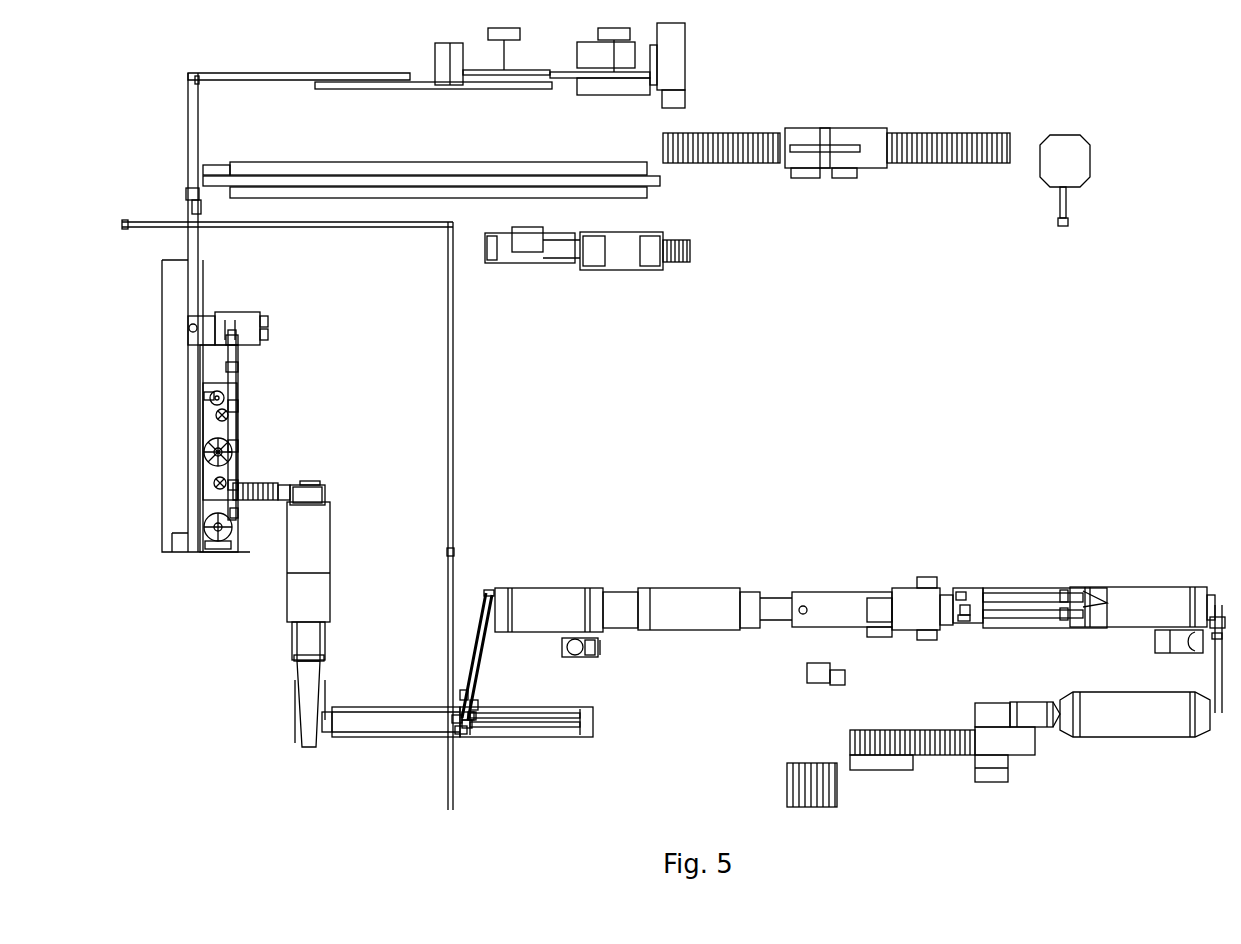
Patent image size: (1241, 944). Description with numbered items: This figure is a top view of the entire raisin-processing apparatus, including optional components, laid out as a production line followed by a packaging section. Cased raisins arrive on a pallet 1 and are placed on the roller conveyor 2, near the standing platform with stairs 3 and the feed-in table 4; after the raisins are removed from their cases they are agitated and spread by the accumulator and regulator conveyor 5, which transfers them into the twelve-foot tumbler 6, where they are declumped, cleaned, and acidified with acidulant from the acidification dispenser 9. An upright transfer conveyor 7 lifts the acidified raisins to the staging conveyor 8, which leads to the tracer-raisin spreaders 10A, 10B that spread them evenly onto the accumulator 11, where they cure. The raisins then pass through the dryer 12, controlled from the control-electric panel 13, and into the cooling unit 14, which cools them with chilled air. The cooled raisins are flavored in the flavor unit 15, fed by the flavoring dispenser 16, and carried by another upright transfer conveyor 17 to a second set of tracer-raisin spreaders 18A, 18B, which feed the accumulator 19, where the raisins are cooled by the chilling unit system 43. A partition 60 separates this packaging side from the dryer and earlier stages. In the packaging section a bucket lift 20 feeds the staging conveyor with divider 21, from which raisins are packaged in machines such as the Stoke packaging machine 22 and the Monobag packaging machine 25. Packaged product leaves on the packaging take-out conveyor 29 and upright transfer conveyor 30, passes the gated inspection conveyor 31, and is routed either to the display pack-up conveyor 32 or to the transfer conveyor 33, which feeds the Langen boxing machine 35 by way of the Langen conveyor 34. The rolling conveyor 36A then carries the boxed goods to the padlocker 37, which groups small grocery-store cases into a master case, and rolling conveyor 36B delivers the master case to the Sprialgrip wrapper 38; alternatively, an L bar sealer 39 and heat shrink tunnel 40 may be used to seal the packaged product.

The pallet 1 is at (843, 784).
The roller conveyor 2 is at (945, 756).
The standing platform with stairs 3 is at (975, 772).
The feed-in table 4 is at (969, 713).
The accumulator and regulator conveyor 5 is at (1036, 728).
The tumbler declumper cleaner acidifier 6 is at (1108, 737).
The upright transfer conveyor 7 is at (1214, 665).
The staging conveyor 8 is at (1130, 628).
The acidification dispenser 9 is at (1157, 653).
The tracer-raisins spreader 10A is at (1020, 620).
The tracer-raisins spreader 10B is at (1035, 631).
The accumulator production 11 is at (976, 625).
The dryer 12 is at (903, 637).
The control-electric panel 13 is at (807, 680).
The cooling unit 14 is at (709, 632).
The flavor unit 15 is at (523, 633).
The flavoring dispenser 16 is at (562, 647).
The upright transfer conveyor 17 is at (483, 662).
The tracer-raisins spreader 18A is at (527, 715).
The tracer-raisins spreader 18B is at (546, 703).
The accumulator packaging 19 is at (329, 710).
The bucket lift 20 is at (280, 487).
The staging conveyor with divider 21 is at (240, 372).
The Stoke packaging machine 22 is at (246, 548).
The Monobag packaging machine 25 is at (258, 348).
The packaging take-out conveyor 29 is at (180, 366).
The upright transfer conveyor 30 is at (180, 243).
The inspection conveyor 31 is at (188, 120).
The display pack-up conveyor 32 is at (291, 160).
The transfer conveyor to Langen 33 is at (252, 83).
The Langen conveyor 34 is at (330, 92).
The Langen boxing machine 35 is at (530, 70).
The rolling conveyor 36A is at (694, 133).
The rolling conveyor 36B is at (954, 133).
The padlocker 37 is at (869, 128).
The Sprialgrip wrapper 38 is at (1043, 185).
The L bar sealer 39 is at (515, 265).
The heat shrink tunnel 40 is at (618, 270).
The chilling unit system 43 is at (339, 551).
The partition 60 is at (454, 407).